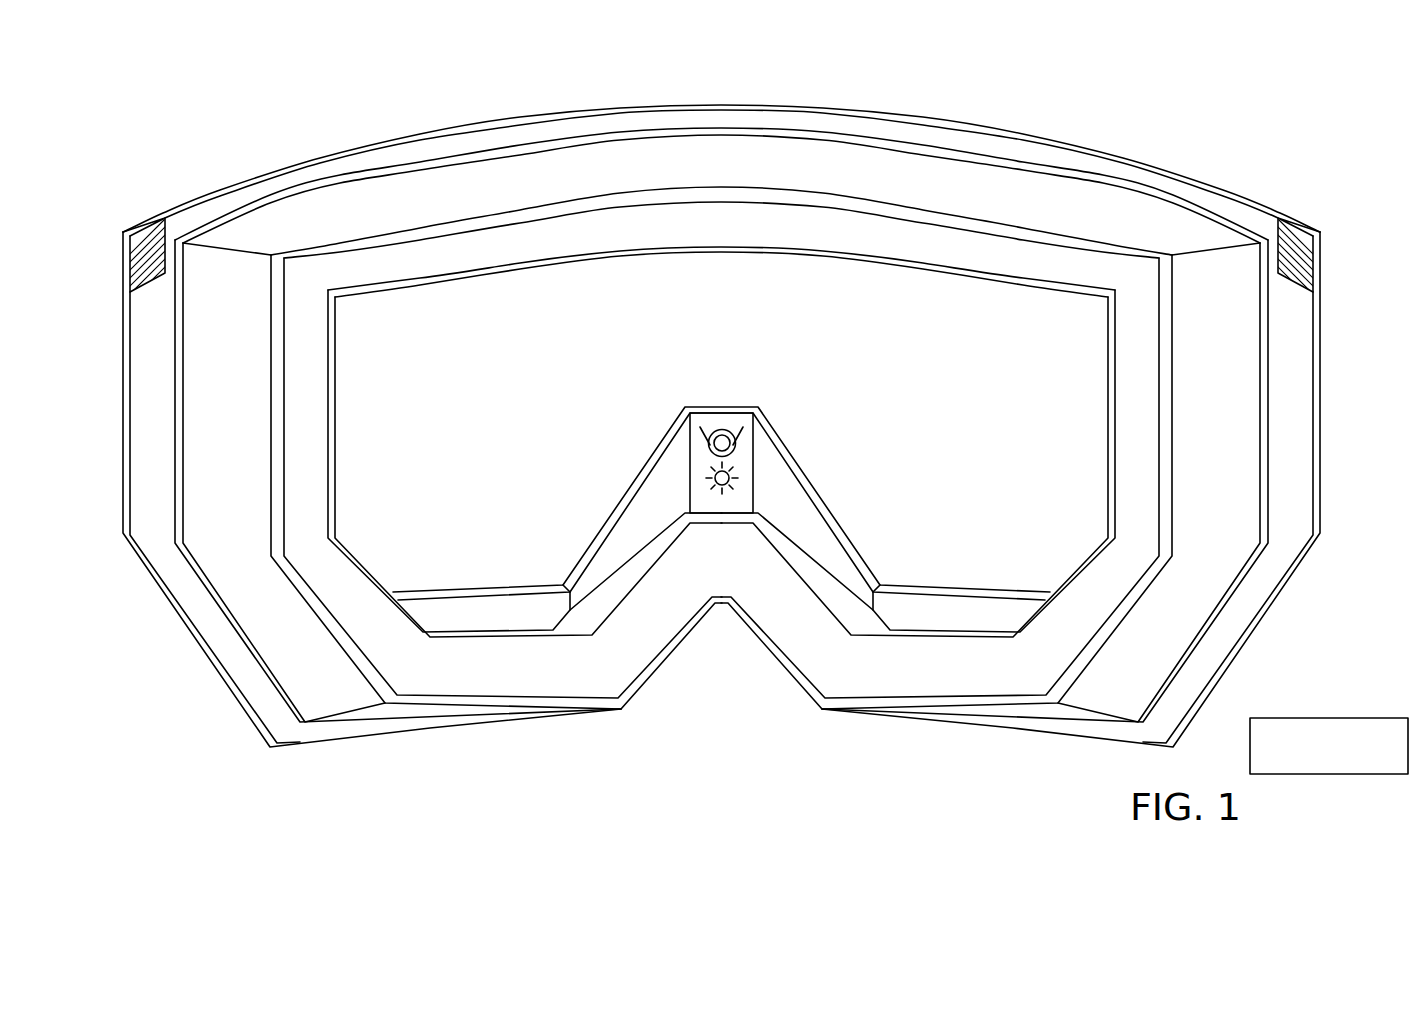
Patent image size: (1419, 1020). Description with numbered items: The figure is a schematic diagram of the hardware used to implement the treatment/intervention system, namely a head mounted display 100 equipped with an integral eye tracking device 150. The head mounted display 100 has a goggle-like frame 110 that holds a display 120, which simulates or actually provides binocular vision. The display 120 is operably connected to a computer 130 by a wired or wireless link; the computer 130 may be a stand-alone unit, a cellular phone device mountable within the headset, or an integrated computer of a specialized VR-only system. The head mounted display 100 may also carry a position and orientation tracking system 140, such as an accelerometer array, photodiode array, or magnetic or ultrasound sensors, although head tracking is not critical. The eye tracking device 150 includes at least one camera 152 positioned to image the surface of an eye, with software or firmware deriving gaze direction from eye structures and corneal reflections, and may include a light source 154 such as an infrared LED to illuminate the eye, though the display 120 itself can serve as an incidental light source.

The head mounted display 100 is at (237, 88).
The goggle-like frame 110 is at (253, 680).
The display 120 is at (998, 350).
The computer 130 is at (1213, 650).
The position and orientation tracking system 140 is at (1281, 217).
The eye tracking device 150 is at (786, 582).
The camera 152 is at (724, 444).
The light source 154 is at (726, 482).